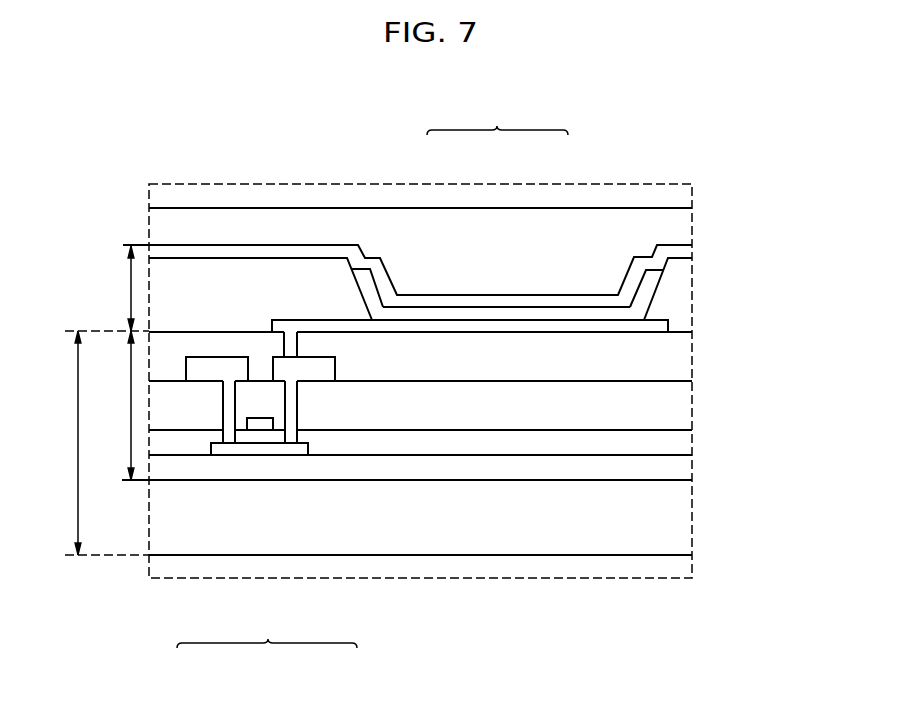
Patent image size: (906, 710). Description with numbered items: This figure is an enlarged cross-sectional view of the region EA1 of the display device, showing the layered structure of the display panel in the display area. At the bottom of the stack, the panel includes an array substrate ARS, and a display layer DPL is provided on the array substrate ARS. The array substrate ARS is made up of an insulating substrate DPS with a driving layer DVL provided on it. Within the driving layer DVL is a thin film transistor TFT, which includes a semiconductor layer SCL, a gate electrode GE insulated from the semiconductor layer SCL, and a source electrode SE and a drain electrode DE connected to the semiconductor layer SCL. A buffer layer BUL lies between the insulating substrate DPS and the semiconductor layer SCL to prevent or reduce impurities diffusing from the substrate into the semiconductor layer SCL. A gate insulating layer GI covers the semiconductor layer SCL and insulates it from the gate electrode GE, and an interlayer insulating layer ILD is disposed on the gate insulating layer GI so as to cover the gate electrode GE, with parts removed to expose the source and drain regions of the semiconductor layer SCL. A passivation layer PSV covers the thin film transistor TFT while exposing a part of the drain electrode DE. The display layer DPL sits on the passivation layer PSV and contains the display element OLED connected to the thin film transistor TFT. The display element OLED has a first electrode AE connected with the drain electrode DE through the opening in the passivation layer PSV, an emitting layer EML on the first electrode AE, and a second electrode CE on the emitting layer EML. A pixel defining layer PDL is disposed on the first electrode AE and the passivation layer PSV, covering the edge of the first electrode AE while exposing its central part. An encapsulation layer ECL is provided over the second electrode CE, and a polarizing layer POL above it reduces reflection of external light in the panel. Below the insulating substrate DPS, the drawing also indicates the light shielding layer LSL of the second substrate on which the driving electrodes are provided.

The region EA1 is at (650, 186).
The polarizing layer POL is at (685, 193).
The encapsulation layer ECL is at (685, 230).
The pixel defining layer PDL is at (685, 290).
The display element OLED is at (497, 117).
The first electrode AE is at (439, 325).
The emitting layer EML is at (497, 313).
The second electrode CE is at (554, 300).
The passivation layer PSV is at (685, 362).
The interlayer insulating layer ILD is at (685, 410).
The gate insulating layer GI is at (685, 442).
The buffer layer BUL is at (685, 468).
The insulating substrate DPS is at (685, 518).
The light shielding layer LSL is at (685, 568).
The source electrode SE is at (202, 368).
The semiconductor layer SCL is at (230, 450).
The gate electrode GE is at (260, 425).
The drain electrode DE is at (318, 372).
The thin film transistor TFT is at (267, 658).
The display layer DPL is at (110, 288).
The driving layer DVL is at (110, 405).
The array substrate ARS is at (57, 443).